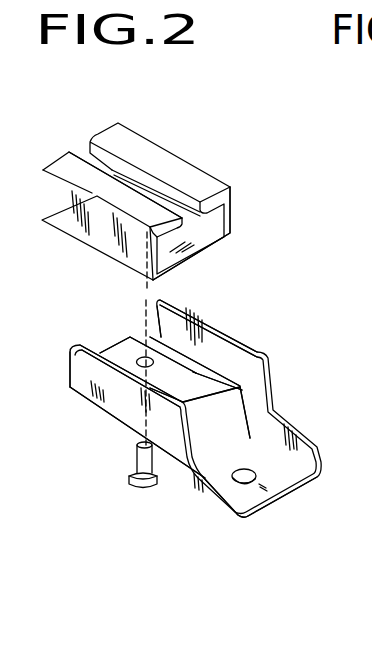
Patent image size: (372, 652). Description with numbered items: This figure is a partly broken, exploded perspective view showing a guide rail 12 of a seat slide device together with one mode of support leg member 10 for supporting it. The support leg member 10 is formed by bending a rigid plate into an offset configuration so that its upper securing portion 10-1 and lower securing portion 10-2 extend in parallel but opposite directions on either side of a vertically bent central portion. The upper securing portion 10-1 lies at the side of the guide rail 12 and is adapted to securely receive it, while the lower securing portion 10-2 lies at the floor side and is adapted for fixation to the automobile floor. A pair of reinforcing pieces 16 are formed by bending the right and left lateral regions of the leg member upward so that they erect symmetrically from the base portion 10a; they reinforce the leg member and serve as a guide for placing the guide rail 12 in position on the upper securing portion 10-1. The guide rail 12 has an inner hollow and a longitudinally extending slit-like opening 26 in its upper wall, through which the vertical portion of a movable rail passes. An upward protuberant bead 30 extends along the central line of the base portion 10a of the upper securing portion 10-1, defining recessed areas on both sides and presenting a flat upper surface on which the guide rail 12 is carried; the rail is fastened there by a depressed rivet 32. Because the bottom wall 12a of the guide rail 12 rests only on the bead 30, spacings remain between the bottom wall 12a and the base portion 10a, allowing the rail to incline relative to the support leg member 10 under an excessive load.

The support leg member 10 is at (258, 322).
The upper securing portion 10-1 is at (118, 338).
The lower securing portion 10-2 is at (288, 476).
The base portion 10a is at (223, 413).
The guide rail 12 is at (215, 171).
The bottom wall 12a is at (204, 240).
The reinforcing pieces 16 is at (211, 327).
The slit-like opening 26 is at (110, 171).
The upward protuberant bead 30 is at (190, 380).
The rivet 32 is at (137, 460).